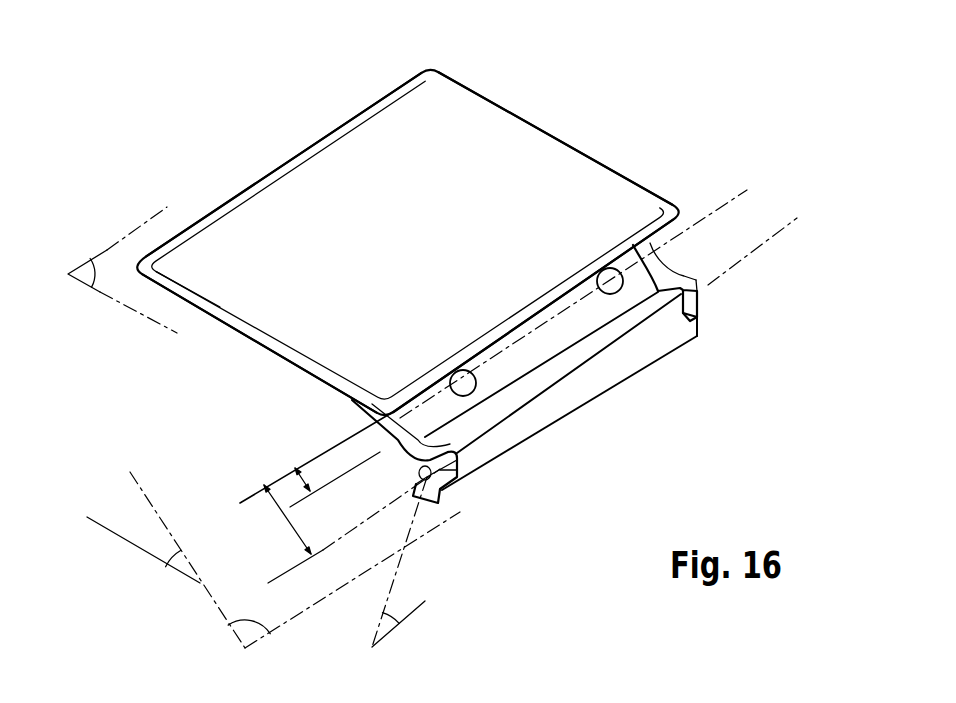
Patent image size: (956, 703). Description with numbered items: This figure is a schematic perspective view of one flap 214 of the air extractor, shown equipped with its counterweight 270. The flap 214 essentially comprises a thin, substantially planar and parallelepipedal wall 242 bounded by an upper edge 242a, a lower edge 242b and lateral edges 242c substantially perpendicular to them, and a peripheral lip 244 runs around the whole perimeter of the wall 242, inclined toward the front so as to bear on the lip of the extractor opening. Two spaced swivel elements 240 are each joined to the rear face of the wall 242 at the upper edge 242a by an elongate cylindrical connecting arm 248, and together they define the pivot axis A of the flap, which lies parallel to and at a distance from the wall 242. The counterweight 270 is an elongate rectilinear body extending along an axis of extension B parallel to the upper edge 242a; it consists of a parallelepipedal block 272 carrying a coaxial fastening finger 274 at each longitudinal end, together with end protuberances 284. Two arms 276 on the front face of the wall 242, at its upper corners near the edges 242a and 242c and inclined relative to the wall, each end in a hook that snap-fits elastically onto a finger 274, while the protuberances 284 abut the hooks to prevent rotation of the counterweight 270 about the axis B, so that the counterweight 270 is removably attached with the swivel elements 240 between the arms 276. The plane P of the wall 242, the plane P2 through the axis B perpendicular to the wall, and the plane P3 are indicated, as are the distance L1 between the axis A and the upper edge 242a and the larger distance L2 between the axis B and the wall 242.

The flap 214 is at (677, 106).
The wall 242 is at (545, 193).
The upper edge 242a is at (633, 233).
The lower edge 242b is at (268, 182).
The lateral edges 242c is at (528, 121).
The peripheral lip 244 is at (170, 293).
The connecting arm 248 is at (458, 375).
The swivel element 240 is at (468, 395).
The counterweight 270 is at (663, 352).
The parallelepipedal block 272 is at (565, 395).
The fastening finger 274 is at (466, 459).
The arm 276 is at (386, 473).
The protuberance 284 is at (438, 501).
The axis of pivoting A is at (720, 203).
The axis of extension B is at (770, 233).
The plane of the wall P is at (103, 270).
The second plane P2 is at (398, 603).
The angle P3 is at (235, 633).
The distance between axis A and the wall L1 is at (316, 471).
The distance between axis B and the wall L2 is at (284, 519).